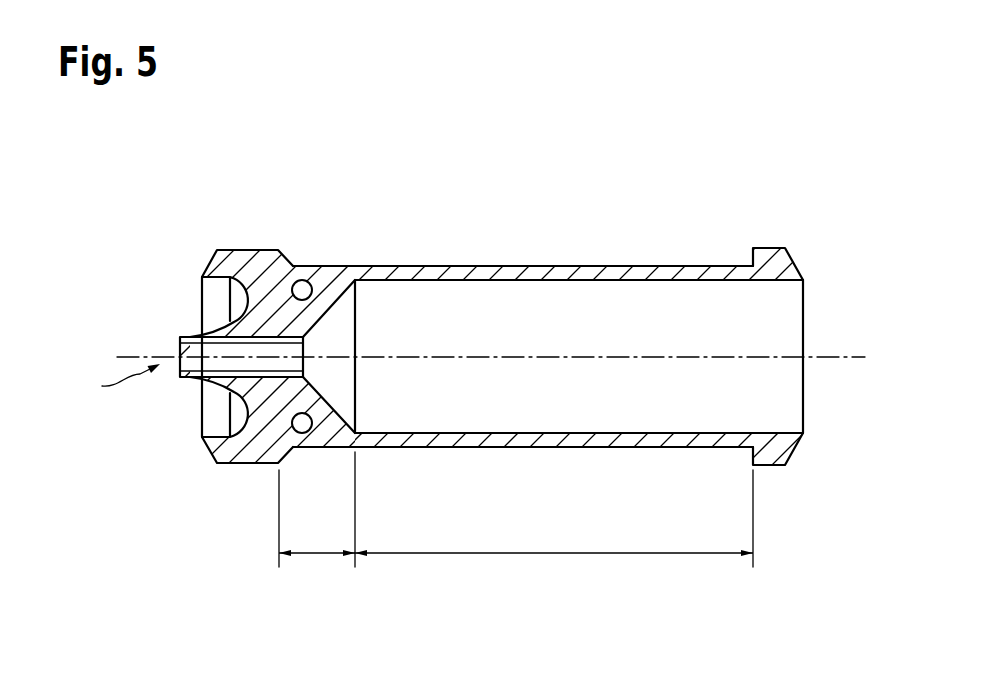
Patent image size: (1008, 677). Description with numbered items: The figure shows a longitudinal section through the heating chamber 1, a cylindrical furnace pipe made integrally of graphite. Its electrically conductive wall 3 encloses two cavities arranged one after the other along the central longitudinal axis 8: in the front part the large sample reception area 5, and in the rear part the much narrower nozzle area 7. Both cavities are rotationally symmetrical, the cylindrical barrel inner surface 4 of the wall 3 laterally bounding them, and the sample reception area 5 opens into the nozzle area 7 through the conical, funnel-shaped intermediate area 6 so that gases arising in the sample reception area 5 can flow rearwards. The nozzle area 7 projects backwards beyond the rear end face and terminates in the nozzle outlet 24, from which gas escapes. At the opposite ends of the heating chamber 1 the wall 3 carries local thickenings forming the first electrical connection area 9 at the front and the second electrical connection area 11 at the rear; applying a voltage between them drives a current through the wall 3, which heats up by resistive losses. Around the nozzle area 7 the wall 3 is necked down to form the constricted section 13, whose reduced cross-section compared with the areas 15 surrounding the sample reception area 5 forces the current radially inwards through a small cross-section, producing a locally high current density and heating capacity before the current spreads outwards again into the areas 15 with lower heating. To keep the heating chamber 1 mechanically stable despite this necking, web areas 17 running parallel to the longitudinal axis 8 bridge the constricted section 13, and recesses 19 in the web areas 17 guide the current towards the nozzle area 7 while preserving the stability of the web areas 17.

The heating chamber 1 is at (443, 178).
The wall 3 is at (522, 270).
The barrel inner surface 4 is at (621, 296).
The sample reception area 5 is at (740, 413).
The intermediate area 6 is at (343, 383).
The nozzle area 7 is at (193, 348).
The longitudinal axis 8 is at (858, 358).
The first electrical connection area 9 is at (236, 232).
The second electrical connection area 11 is at (768, 233).
The constricted section 13 is at (315, 553).
The areas surrounding the sample reception area 15 is at (590, 553).
The web areas 17 is at (278, 303).
The recesses 19 is at (302, 280).
The nozzle outlet 24 is at (112, 385).